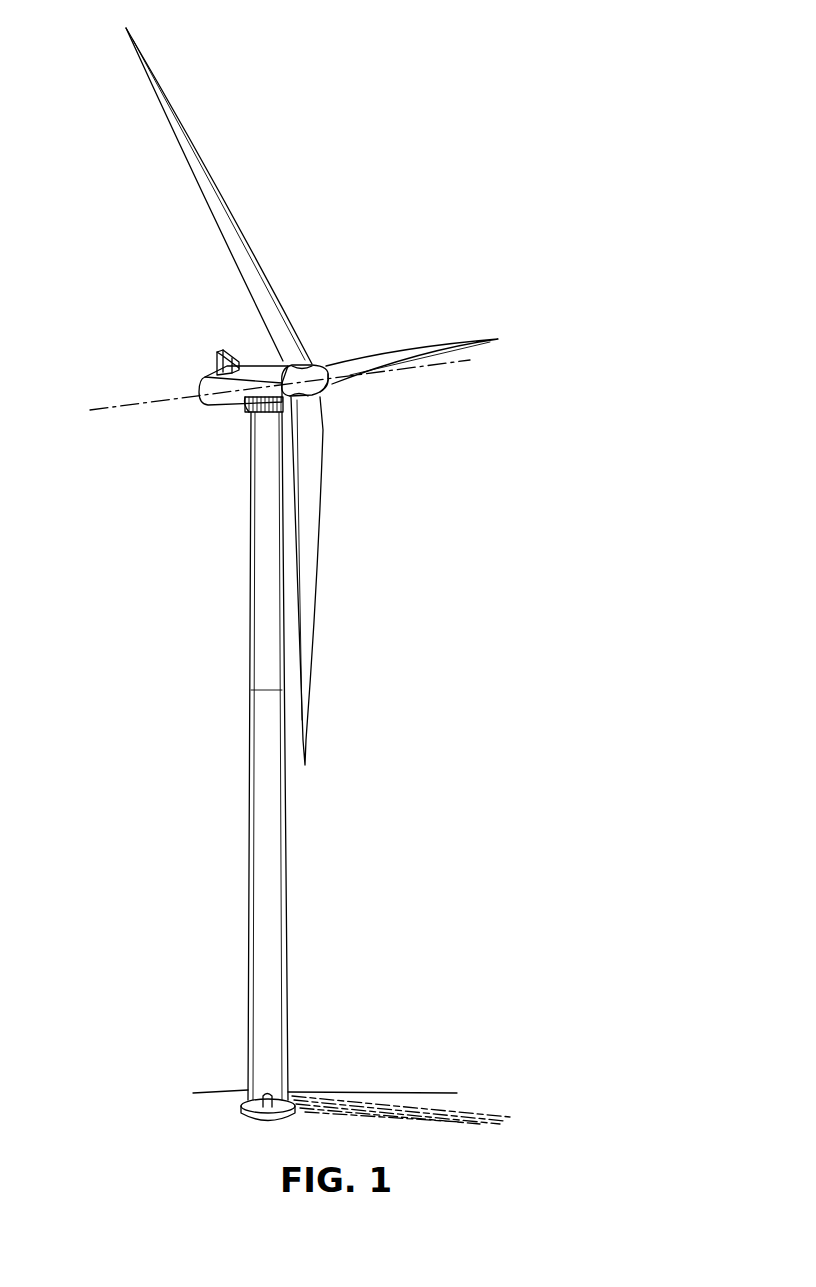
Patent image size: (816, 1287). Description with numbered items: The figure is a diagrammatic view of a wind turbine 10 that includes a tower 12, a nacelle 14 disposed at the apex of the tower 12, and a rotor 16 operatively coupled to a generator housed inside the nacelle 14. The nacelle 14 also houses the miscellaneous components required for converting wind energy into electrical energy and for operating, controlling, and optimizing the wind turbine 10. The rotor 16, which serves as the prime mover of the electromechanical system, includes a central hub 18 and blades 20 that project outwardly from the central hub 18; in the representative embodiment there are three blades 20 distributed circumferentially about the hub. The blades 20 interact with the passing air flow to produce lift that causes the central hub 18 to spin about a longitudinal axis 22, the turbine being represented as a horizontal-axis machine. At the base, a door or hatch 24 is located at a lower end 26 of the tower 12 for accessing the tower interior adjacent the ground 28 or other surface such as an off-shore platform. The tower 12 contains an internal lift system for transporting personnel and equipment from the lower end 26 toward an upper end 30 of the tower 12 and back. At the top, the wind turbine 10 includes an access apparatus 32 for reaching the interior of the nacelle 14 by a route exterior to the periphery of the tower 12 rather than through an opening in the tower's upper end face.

The wind turbine 10 is at (433, 240).
The tower 12 is at (243, 627).
The nacelle 14 is at (199, 385).
The rotor 16 is at (320, 392).
The central hub 18 is at (308, 364).
The blade 20 is at (162, 110).
The longitudinal axis 22 is at (100, 408).
The door or hatch 24 is at (266, 1092).
The lower end 26 is at (248, 1089).
The ground 28 is at (350, 1092).
The upper end 30 is at (268, 413).
The access apparatus 32 is at (244, 422).